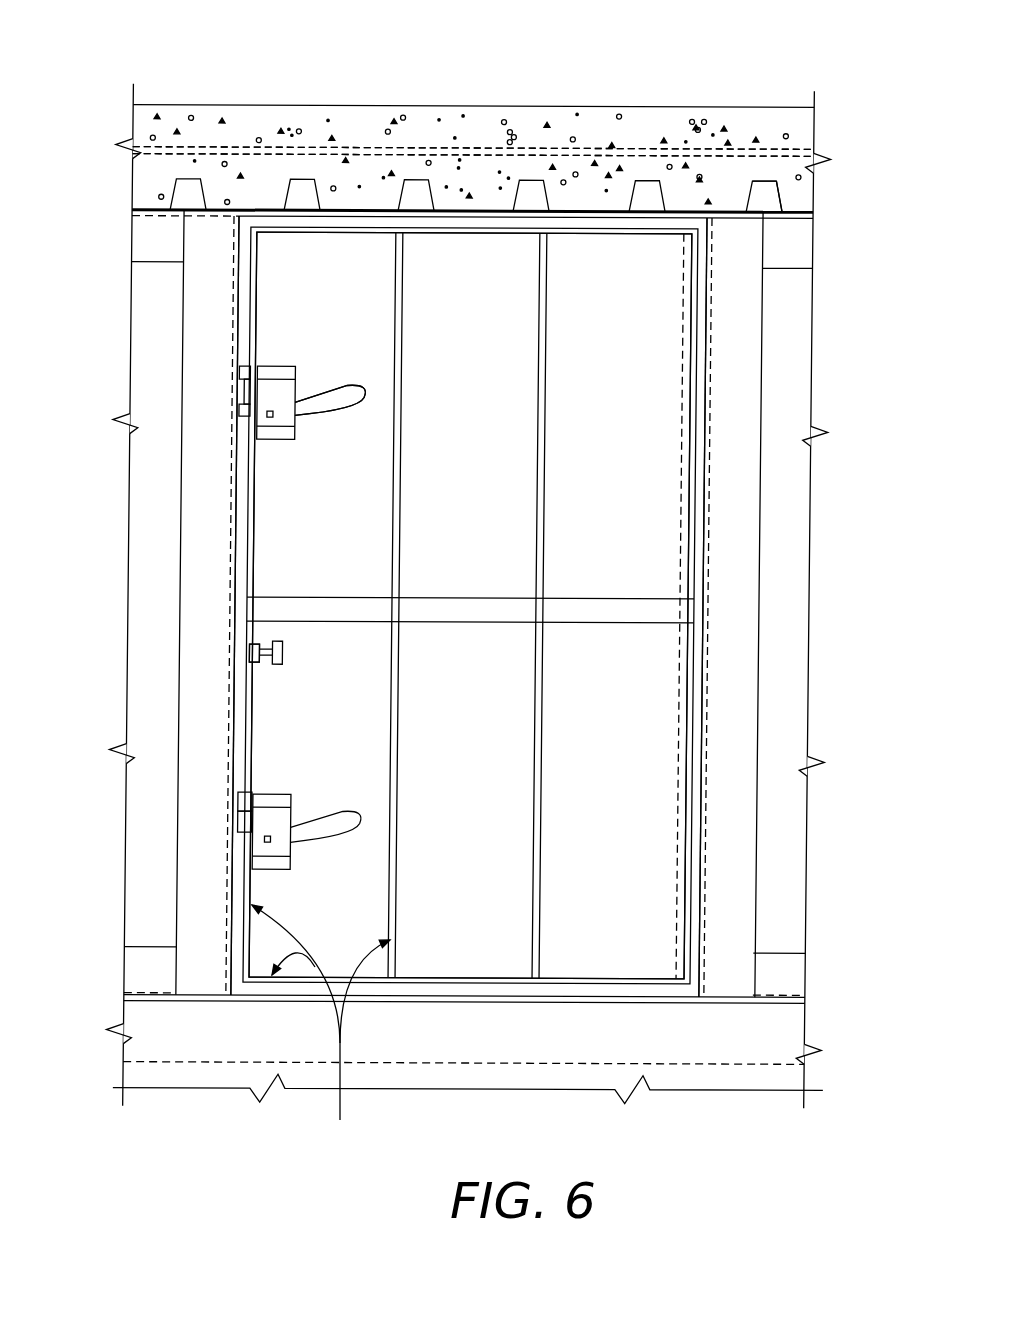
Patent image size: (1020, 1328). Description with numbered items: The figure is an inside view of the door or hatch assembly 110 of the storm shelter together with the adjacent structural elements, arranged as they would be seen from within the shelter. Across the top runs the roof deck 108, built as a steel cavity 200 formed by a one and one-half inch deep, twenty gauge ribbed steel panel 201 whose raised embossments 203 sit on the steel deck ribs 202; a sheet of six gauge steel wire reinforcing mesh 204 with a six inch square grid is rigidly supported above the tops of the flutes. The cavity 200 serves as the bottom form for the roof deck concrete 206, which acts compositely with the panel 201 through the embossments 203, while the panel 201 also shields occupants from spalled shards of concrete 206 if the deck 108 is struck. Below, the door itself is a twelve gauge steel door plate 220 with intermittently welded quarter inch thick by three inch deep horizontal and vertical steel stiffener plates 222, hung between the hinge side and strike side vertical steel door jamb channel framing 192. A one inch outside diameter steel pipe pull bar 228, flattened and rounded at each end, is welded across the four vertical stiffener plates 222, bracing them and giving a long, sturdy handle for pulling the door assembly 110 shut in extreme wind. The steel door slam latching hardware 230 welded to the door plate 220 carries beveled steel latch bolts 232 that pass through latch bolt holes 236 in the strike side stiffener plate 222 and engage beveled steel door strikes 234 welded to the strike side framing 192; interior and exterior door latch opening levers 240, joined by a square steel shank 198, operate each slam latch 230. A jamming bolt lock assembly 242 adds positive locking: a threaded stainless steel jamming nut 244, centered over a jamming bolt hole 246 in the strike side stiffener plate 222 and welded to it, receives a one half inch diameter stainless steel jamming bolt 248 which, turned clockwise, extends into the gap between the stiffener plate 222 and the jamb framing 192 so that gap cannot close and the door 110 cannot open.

The roof deck 108 is at (418, 105).
The roof deck concrete 206 is at (528, 117).
The steel wire reinforcing mesh 204 is at (615, 150).
The steel cavity 200 is at (705, 178).
The ribbed steel panel 201 is at (732, 210).
The steel deck ribs 202 is at (768, 180).
The raised embossments 203 is at (778, 190).
The door or hatch assembly 110 is at (652, 341).
The vertical steel door jamb channel framing 192 is at (247, 512).
The square steel shank 198 is at (265, 838).
The steel door plate 220 is at (270, 718).
The steel stiffener plates 222 is at (321, 1028).
The steel pipe pull bar 228 is at (250, 597).
The steel door slam latching hardware 230 is at (272, 447).
The beveled steel latch bolts 232 is at (244, 388).
The beveled steel door strikes 234 is at (237, 414).
The latch bolt holes 236 is at (240, 375).
The door latch opening levers 240 is at (337, 392).
The jamming bolt lock assembly 242 is at (263, 641).
The jamming nut 244 is at (262, 665).
The jamming bolt hole 246 is at (252, 652).
The jamming bolt 248 is at (287, 651).